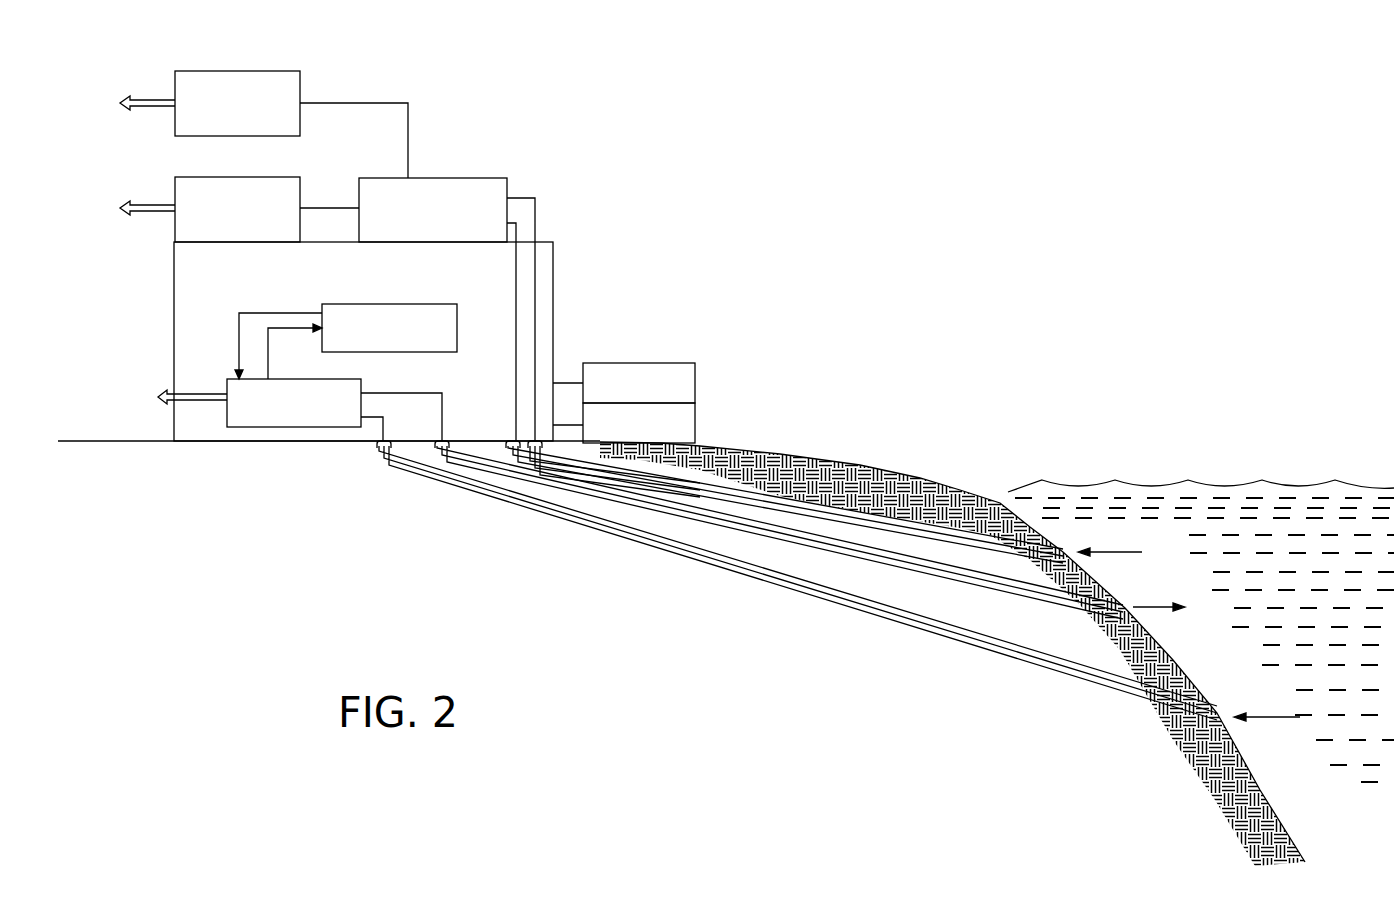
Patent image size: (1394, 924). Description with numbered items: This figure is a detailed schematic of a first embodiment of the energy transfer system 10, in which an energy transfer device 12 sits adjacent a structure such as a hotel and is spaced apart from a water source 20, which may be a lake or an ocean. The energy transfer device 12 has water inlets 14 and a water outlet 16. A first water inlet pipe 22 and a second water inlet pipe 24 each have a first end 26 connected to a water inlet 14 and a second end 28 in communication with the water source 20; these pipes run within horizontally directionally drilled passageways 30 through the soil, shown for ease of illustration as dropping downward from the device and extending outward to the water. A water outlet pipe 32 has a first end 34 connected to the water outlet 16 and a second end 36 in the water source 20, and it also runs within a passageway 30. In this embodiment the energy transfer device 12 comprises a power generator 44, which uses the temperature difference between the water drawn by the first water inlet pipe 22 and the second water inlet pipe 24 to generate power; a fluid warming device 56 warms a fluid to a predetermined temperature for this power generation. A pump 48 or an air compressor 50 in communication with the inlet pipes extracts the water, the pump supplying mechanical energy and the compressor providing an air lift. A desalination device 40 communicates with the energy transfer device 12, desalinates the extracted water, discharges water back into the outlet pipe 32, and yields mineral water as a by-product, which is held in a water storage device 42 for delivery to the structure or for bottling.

The energy transfer system 10 is at (860, 175).
The energy transfer device 12 is at (174, 330).
The water inlets 14 is at (378, 447).
The water outlet 16 is at (440, 445).
The water source 20 is at (1208, 480).
The first water inlet pipe 22 is at (722, 562).
The second water inlet pipe 24 is at (862, 522).
The first end 26 is at (381, 456).
The second end 28 is at (1065, 553).
The horizontally directionally drilled passageways 30 is at (812, 500).
The water outlet pipe 32 is at (763, 535).
The first end 34 is at (432, 462).
The second end 36 is at (1125, 608).
The desalination device 40 is at (472, 178).
The water storage device 42 is at (303, 87).
The power generator 44 is at (250, 428).
The pump 48 is at (698, 425).
The air compressor 50 is at (690, 362).
The fluid warming device 56 is at (458, 340).